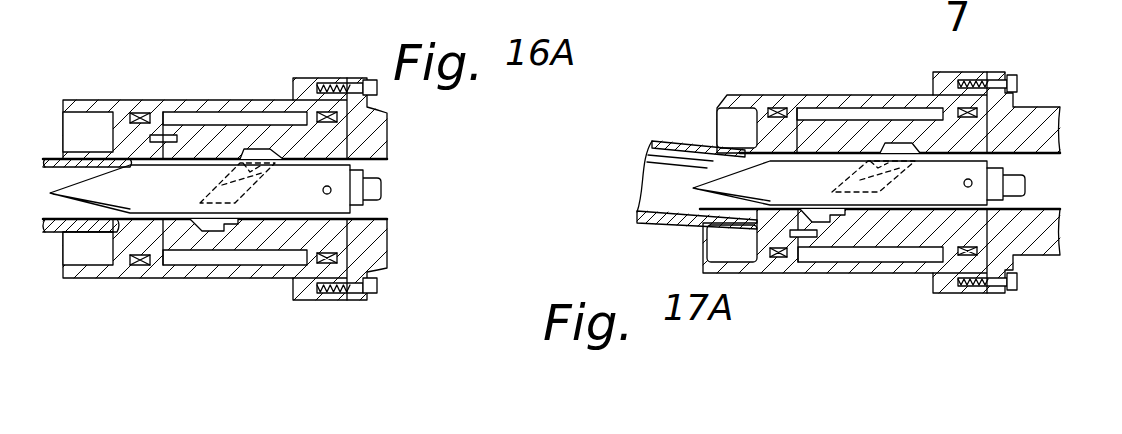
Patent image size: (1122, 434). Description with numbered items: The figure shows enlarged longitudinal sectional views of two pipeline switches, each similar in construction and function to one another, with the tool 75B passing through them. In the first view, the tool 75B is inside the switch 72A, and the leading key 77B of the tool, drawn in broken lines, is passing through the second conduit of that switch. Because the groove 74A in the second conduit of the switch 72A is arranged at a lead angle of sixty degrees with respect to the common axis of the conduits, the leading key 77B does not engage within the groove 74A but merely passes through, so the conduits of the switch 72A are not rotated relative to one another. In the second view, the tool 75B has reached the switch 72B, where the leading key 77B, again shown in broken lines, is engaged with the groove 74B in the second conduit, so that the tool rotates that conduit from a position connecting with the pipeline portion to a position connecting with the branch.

In FIG. 16A, the switch 72A is at (213, 82).
In FIG. 17A, the switch 72B is at (799, 88).
In FIG. 16A, the groove 74A is at (222, 225).
In FIG. 17A, the groove 74B is at (878, 243).
In FIG. 16A, the tool 75B is at (348, 159).
In FIG. 17A, the tool 75B is at (997, 167).
In FIG. 16A, the leading key 77B is at (245, 200).
In FIG. 17A, the leading key 77B is at (855, 150).